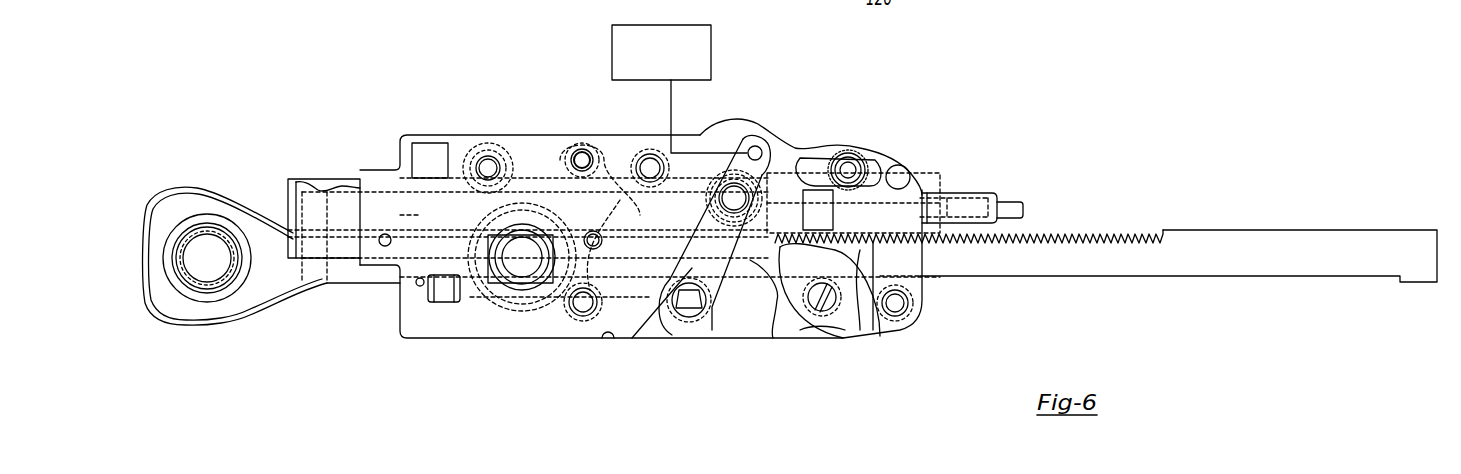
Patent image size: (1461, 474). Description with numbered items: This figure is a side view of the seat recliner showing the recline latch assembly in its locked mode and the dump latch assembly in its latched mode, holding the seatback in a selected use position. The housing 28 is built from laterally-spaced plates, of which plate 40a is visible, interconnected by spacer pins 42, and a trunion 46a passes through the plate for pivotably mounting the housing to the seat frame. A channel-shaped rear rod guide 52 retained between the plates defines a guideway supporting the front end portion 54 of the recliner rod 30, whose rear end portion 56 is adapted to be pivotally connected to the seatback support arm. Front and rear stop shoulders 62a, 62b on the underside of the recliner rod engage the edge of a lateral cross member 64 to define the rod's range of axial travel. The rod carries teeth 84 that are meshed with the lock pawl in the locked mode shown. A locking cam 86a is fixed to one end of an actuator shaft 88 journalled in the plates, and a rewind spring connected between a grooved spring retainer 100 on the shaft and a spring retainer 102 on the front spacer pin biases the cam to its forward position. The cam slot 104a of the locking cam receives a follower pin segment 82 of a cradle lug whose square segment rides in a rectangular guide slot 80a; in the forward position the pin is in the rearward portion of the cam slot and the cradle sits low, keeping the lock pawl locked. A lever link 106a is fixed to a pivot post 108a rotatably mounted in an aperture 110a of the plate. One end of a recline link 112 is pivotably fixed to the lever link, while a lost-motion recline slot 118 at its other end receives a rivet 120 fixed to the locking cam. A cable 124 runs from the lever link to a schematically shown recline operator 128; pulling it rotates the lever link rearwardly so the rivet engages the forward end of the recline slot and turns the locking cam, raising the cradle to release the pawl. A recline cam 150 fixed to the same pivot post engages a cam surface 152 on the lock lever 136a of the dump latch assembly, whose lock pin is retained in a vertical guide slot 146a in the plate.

The housing 28 is at (450, 333).
The recliner rod 30 is at (1265, 230).
The plate 40a is at (475, 333).
The spacer pin 42 is at (488, 163).
The trunion 46a is at (522, 263).
The rear rod guide 52 is at (302, 185).
The front end portion 54 is at (1350, 248).
The rear end portion 56 is at (208, 202).
The front stop shoulder 62a is at (1400, 278).
The rear stop shoulder 62b is at (420, 285).
The lateral cross member 64 is at (440, 300).
The rectangular guide slot 80a is at (837, 230).
The follower pin segment 82 is at (800, 240).
The teeth 84 is at (1088, 236).
The locking cam 86a is at (823, 316).
The actuator shaft 88 is at (845, 318).
The grooved spring retainer 100 is at (812, 312).
The spring retainer 102 is at (895, 307).
The cam slot 104a is at (930, 195).
The lever link 106a is at (758, 300).
The pivot post 108a is at (680, 312).
The aperture 110a is at (700, 322).
The recline link 112 is at (790, 170).
The lost-motion recline slot 118 is at (815, 160).
The rivet 120 is at (850, 160).
The cable 124 is at (671, 115).
The recline operator 128 is at (612, 53).
The lock lever 136a is at (632, 283).
The vertical guide slot 146a is at (737, 150).
The recline cam 150 is at (718, 257).
The cam surface 152 is at (640, 300).